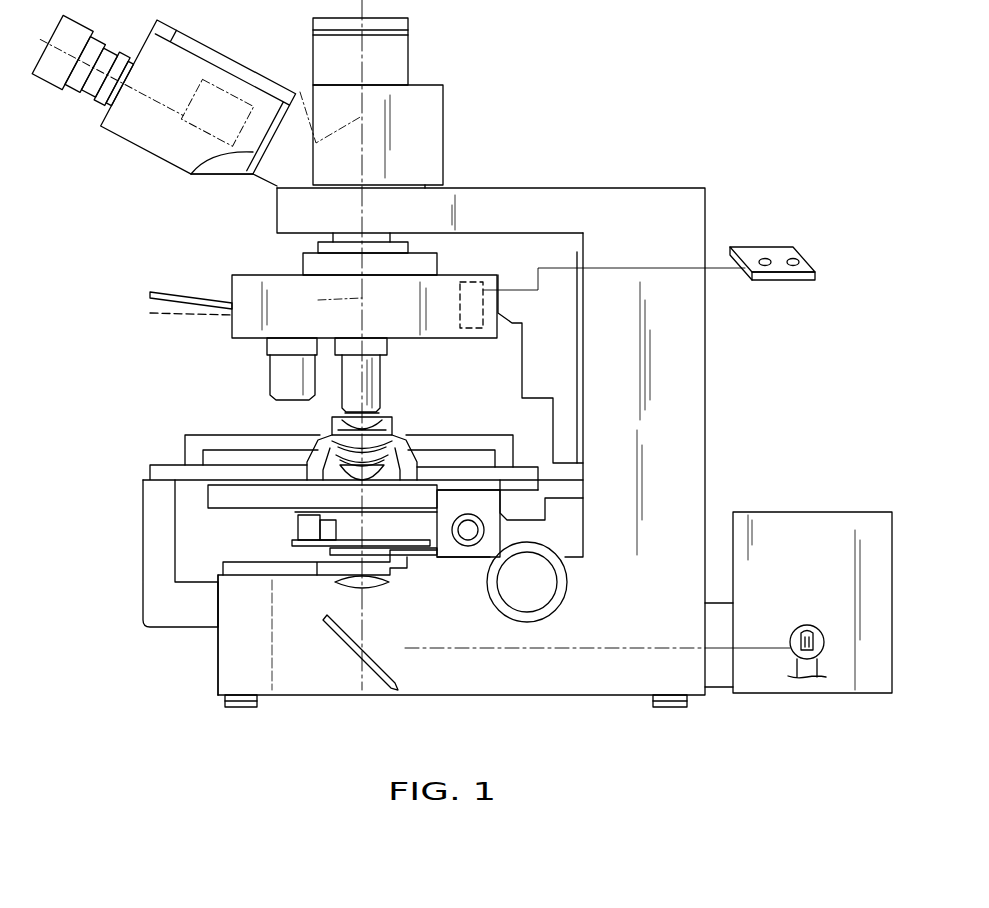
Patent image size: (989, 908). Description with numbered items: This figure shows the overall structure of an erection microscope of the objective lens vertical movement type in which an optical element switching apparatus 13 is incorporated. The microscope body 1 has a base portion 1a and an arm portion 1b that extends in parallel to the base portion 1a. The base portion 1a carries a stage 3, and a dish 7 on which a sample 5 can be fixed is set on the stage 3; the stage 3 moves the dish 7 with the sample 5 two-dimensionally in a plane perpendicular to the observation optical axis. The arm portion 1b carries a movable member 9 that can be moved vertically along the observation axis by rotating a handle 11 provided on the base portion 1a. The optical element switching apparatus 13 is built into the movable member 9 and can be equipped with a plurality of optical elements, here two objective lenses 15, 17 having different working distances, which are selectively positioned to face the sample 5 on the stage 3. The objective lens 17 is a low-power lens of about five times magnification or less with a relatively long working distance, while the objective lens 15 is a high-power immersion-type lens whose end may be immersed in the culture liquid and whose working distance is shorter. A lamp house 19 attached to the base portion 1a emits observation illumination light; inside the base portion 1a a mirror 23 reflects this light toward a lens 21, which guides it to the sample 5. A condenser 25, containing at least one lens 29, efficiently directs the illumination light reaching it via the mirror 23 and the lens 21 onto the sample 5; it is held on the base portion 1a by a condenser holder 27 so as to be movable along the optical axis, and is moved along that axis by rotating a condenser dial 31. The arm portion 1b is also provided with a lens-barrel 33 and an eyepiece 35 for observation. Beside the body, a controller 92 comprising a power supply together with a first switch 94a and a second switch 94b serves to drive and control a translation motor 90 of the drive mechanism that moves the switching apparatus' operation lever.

The microscope body 1 is at (708, 462).
The base portion 1a is at (218, 668).
The arm portion 1b is at (593, 188).
The stage 3 is at (185, 447).
The sample 5 is at (387, 415).
The dish 7 is at (393, 427).
The movable member 9 is at (565, 312).
The handle 11 is at (568, 582).
The optical element switching apparatus 13 is at (220, 268).
The objective lens 15 is at (380, 377).
The objective lens 17 is at (267, 363).
The lamp house 19 is at (833, 512).
The lens 21 is at (378, 590).
The mirror 23 is at (368, 666).
The condenser 25 is at (208, 490).
The condenser holder 27 is at (298, 538).
The lens 29 is at (330, 453).
The condenser dial 31 is at (470, 548).
The lens-barrel 33 is at (443, 130).
The eyepiece 35 is at (65, 97).
The translation motor 90 is at (470, 335).
The controller 92 is at (790, 282).
The first switch 94a is at (762, 258).
The second switch 94b is at (798, 258).